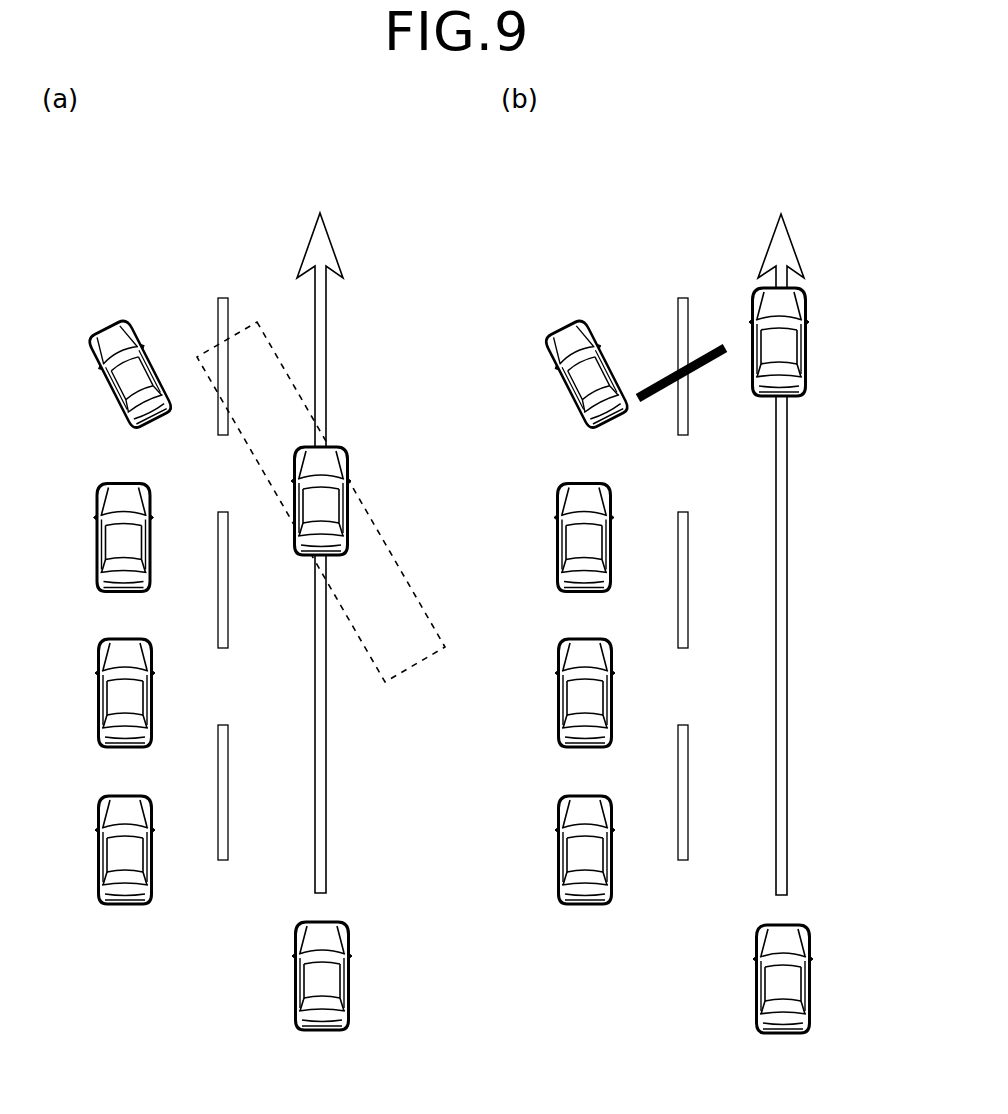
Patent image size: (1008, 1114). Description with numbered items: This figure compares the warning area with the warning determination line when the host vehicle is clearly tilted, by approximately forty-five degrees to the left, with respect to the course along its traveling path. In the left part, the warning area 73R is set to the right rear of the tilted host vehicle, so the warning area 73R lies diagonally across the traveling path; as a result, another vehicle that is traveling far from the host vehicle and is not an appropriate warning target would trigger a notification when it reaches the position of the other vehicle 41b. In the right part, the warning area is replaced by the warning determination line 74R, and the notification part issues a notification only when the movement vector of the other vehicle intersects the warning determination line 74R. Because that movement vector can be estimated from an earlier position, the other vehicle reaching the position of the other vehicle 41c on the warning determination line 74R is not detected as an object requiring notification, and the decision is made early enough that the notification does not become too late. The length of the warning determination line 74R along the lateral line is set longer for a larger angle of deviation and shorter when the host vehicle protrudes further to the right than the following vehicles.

The other vehicle 41b is at (340, 556).
The other vehicle 41c is at (806, 357).
The warning area 73R is at (400, 571).
The warning determination line 74R is at (705, 372).